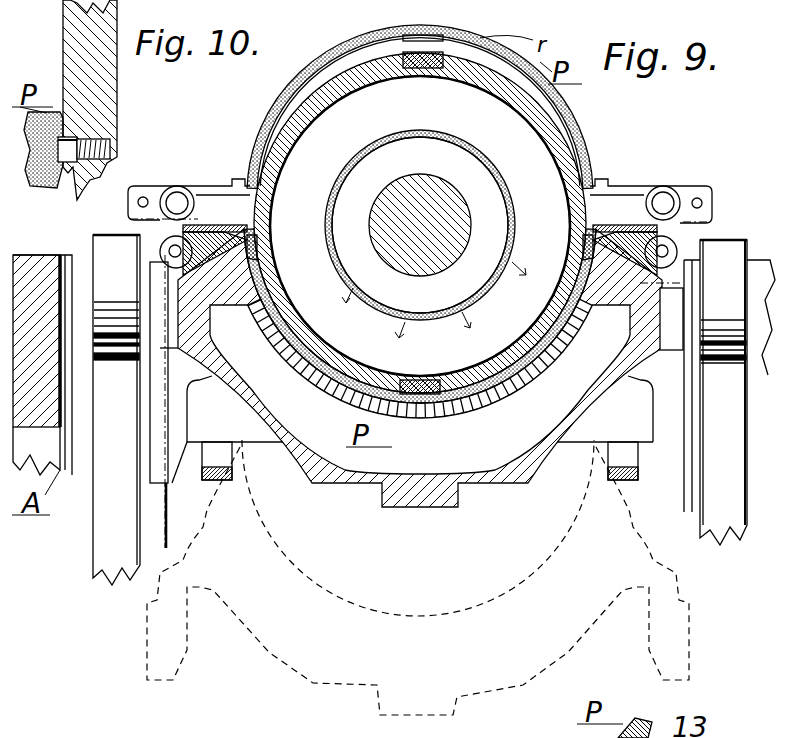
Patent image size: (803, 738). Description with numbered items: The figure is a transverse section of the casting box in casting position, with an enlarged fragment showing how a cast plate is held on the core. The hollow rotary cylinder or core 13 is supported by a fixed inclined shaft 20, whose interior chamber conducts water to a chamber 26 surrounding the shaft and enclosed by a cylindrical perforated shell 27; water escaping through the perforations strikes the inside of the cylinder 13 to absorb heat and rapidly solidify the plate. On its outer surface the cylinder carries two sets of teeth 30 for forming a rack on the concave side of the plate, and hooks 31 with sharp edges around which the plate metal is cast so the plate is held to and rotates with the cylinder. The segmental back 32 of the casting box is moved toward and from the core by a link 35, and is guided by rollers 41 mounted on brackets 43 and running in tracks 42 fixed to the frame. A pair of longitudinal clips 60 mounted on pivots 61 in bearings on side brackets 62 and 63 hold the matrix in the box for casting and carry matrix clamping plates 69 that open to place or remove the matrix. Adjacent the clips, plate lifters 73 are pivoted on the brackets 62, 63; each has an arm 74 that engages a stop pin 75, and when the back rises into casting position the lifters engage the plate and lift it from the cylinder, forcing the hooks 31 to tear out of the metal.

In FIG. 9, the rotary cylinder or core 13 is at (327, 88).
In FIG. 10, the rotary cylinder or core 13 is at (70, 27).
In FIG. 9, the inclined shaft 20 is at (417, 270).
In FIG. 9, the chamber 26 is at (369, 176).
In FIG. 9, the cylindrical perforated shell 27 is at (470, 152).
In FIG. 9, the teeth 30 is at (422, 68).
In FIG. 9, the hooks 31 is at (257, 232).
In FIG. 10, the hooks 31 is at (62, 148).
In FIG. 9, the back of the casting box 32 is at (411, 507).
In FIG. 9, the link 35 is at (223, 433).
In FIG. 9, the rollers 41 is at (117, 363).
In FIG. 9, the guides or tracks 42 is at (105, 549).
In FIG. 9, the brackets 43 is at (157, 540).
In FIG. 9, the longitudinal clips 60 is at (258, 258).
In FIG. 9, the pivots 61 is at (175, 251).
In FIG. 9, the bracket 62 is at (153, 296).
In FIG. 9, the bracket 63 is at (676, 298).
In FIG. 9, the matrix clamping plates 69 is at (418, 233).
In FIG. 9, the plate lifters 73 is at (240, 186).
In FIG. 9, the arm 74 is at (133, 218).
In FIG. 9, the stop pin 75 is at (142, 197).